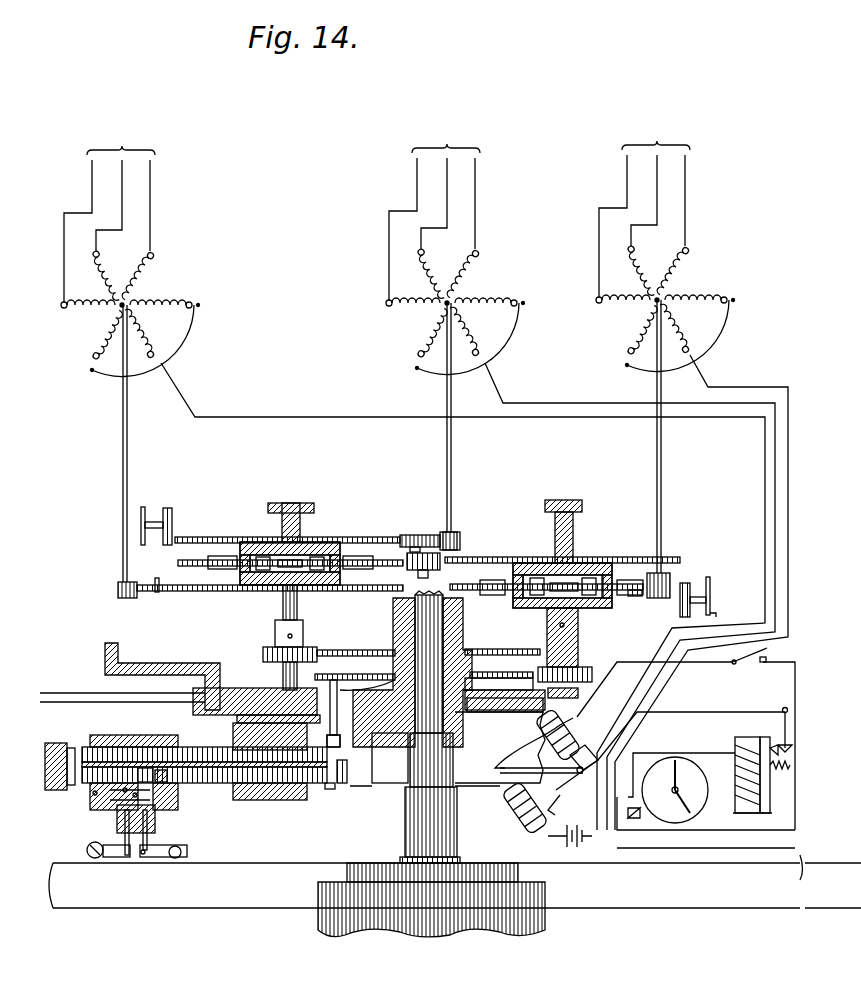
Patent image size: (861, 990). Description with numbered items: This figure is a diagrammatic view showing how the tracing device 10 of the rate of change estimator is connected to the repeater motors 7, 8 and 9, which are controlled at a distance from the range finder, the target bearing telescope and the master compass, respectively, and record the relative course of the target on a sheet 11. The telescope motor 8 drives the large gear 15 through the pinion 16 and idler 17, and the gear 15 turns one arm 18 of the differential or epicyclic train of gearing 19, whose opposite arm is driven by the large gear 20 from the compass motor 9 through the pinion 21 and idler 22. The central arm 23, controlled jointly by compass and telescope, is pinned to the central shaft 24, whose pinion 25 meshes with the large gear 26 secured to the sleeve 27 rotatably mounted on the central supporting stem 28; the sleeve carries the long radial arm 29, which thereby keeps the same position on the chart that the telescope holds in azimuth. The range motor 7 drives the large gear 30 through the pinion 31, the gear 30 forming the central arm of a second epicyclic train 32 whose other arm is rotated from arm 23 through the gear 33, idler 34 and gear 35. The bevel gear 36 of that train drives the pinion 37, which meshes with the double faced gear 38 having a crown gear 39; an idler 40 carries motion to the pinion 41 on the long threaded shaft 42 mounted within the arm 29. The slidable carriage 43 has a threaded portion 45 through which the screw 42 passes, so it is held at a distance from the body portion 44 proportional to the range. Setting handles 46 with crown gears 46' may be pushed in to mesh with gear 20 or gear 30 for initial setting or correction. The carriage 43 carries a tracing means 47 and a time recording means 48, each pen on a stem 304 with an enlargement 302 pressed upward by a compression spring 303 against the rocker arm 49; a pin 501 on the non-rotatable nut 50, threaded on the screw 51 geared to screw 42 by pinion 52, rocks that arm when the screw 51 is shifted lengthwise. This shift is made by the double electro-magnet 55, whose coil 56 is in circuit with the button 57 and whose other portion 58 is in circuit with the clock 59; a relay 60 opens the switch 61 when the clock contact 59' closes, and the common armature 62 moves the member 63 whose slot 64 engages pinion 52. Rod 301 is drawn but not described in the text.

The repeater motor 7 is at (665, 305).
The repeater motor 8 is at (130, 308).
The repeater motor 9 is at (455, 280).
The tracing device 10 is at (474, 576).
The sheet 11 is at (255, 866).
The large gear 15 is at (205, 591).
The pinion 16 is at (125, 598).
The idler 17 is at (157, 592).
The arm 18 is at (262, 585).
The differential or epicyclic train of gearing 19 is at (234, 559).
The large gear 20 is at (375, 537).
The pinion 21 is at (446, 532).
The idler 22 is at (416, 535).
The central arm 23 is at (270, 545).
The central shaft 24 is at (298, 603).
The pinion 25 is at (303, 648).
The large gear 26 is at (358, 650).
The sleeve 27 is at (466, 724).
The central supporting stem 28 is at (414, 760).
The radial arm 29 is at (232, 800).
The large gear 30 is at (630, 596).
The pinion 31 is at (660, 598).
The epicyclic train of gearing 32 is at (606, 578).
The gear 33 is at (180, 563).
The idler 34 is at (423, 573).
The gear 35 is at (502, 553).
The bevel gear 36 is at (585, 608).
The pinion 37 is at (588, 668).
The double faced gear 38 is at (505, 681).
The crown gear 39 is at (502, 660).
The idler 40 is at (325, 695).
The pinion 41 is at (390, 759).
The threaded shaft 42 is at (218, 747).
The slidable carriage 43 is at (102, 735).
The body portion 44 is at (222, 688).
The threaded portion 45 is at (138, 745).
The setting handle 46 is at (438, 551).
The crown gear 46' is at (447, 551).
The tracing means 47 is at (86, 852).
The time recording means 48 is at (188, 852).
The rocker arm 49 is at (160, 812).
The non-rotatable nut 50 is at (160, 788).
The screw 51 is at (208, 780).
The pinion 52 is at (330, 790).
The double electro-magnet 55 is at (515, 775).
The coil 56 is at (575, 718).
The button 57 is at (758, 660).
The magnet portion 58 is at (520, 822).
The clock 59 is at (681, 790).
The contact 59' is at (671, 823).
The relay 60 is at (735, 745).
The switch 61 is at (778, 738).
The armature 62 is at (503, 765).
The member 63 is at (366, 788).
The slot 64 is at (343, 790).
The rod 301 is at (150, 838).
The enlargement 302 is at (135, 797).
The compression spring 303 is at (119, 823).
The stem 304 is at (120, 782).
The pin 501 is at (125, 792).